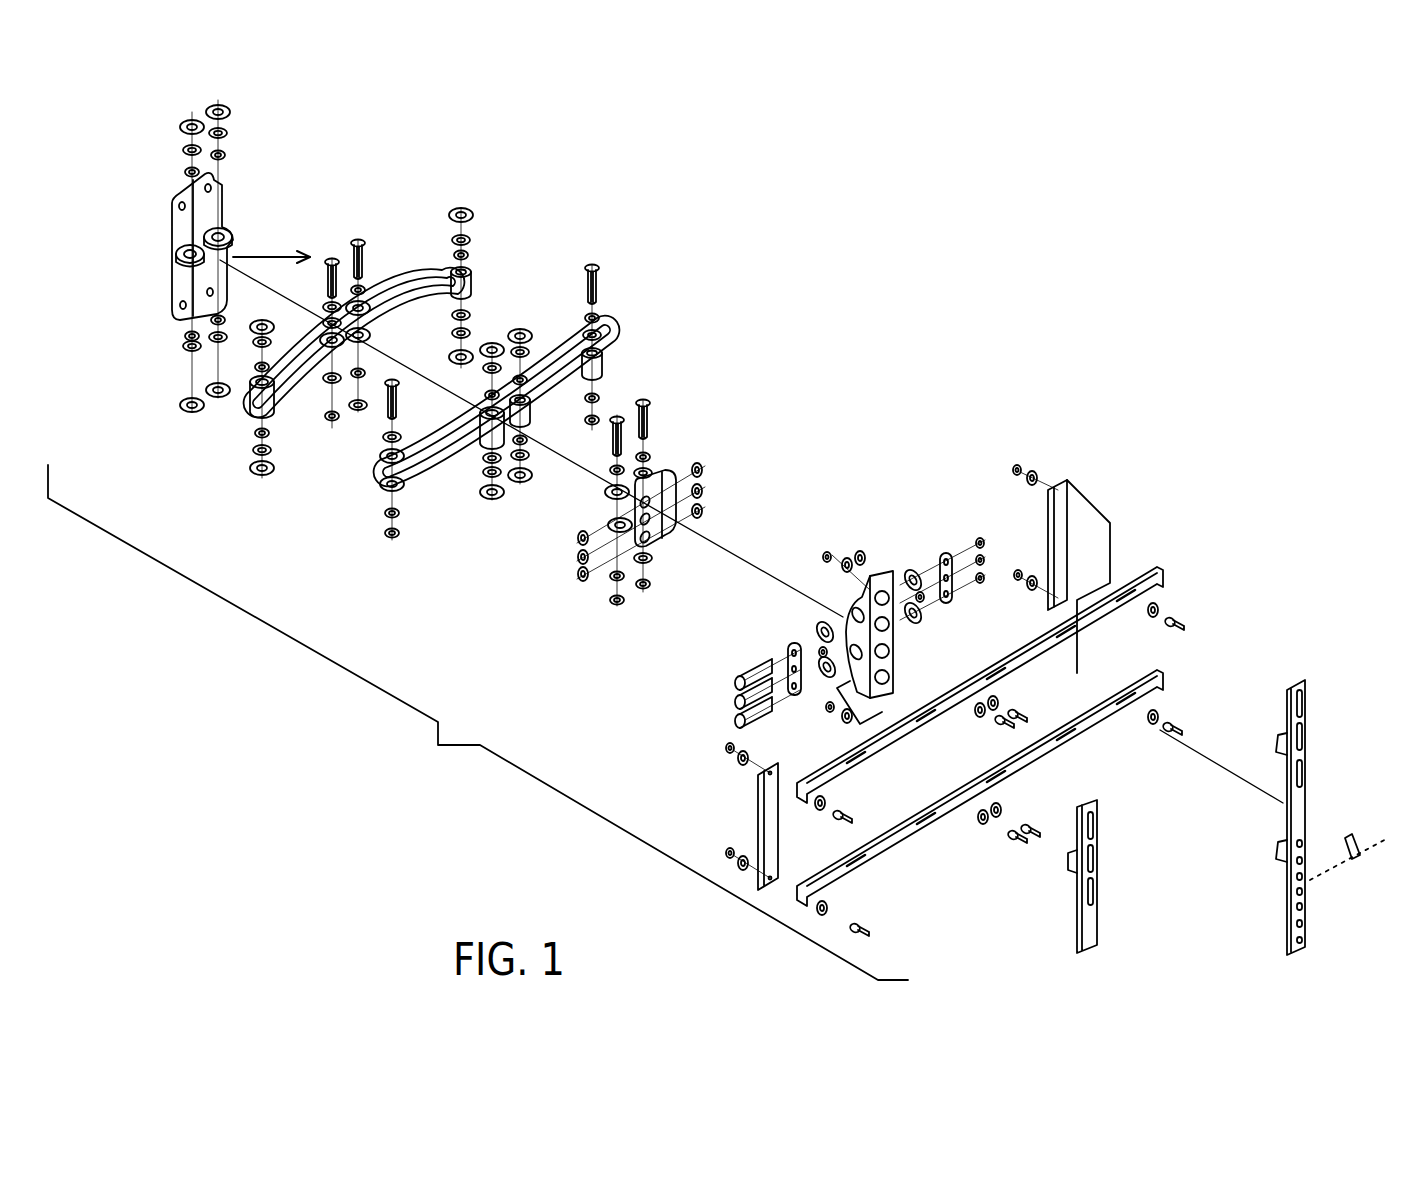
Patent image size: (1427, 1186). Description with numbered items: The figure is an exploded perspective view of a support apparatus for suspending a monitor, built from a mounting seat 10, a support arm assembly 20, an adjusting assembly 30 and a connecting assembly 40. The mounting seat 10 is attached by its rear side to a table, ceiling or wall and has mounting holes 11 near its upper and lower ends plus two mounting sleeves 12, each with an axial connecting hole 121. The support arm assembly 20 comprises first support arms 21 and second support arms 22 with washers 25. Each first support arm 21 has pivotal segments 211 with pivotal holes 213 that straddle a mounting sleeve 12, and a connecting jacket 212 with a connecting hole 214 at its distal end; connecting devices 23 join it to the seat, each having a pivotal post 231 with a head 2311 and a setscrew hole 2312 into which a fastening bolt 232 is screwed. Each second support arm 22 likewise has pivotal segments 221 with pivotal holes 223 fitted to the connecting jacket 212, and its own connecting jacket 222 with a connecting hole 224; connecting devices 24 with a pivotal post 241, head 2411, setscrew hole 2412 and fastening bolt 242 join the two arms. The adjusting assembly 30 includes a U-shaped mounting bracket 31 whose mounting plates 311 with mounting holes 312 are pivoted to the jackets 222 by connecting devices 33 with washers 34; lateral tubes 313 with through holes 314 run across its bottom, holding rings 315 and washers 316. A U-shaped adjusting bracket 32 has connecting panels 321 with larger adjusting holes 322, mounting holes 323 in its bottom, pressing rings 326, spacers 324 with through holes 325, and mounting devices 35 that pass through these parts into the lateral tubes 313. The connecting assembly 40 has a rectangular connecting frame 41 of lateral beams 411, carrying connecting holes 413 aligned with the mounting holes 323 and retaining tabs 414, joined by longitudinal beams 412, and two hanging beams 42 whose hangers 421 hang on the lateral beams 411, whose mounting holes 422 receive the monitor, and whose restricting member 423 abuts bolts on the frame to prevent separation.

The mounting seat 10 is at (231, 256).
The mounting holes 11 is at (217, 187).
The mounting sleeves 12 is at (187, 270).
The connecting hole 121 is at (225, 237).
The support arm assembly 20 is at (570, 245).
The first support arms 21 is at (488, 203).
The pivotal segments 211 is at (450, 277).
The connecting jacket 212 is at (472, 292).
The pivotal hole 213 is at (368, 302).
The connecting hole 214 is at (465, 278).
The second support arms 22 is at (421, 500).
The pivotal segments 221 is at (595, 358).
The connecting jacket 222 is at (523, 418).
The pivotal hole 223 is at (610, 335).
The connecting hole 224 is at (473, 437).
The connecting devices 23 is at (200, 250).
The pivotal post 231 is at (208, 308).
The head 2311 is at (358, 240).
The setscrew hole 2312 is at (255, 328).
The fastening bolt 232 is at (358, 400).
The connecting devices 24 is at (634, 218).
The pivotal post 241 is at (598, 283).
The head 2411 is at (594, 267).
The setscrew hole 2412 is at (606, 302).
The fastening bolt 242 is at (598, 418).
The washers 25 is at (238, 366).
The adjusting assembly 30 is at (900, 400).
The mounting bracket 31 is at (662, 440).
The mounting plates 311 is at (657, 467).
The mounting holes 312 is at (660, 525).
The lateral tubes 313 is at (693, 503).
The through hole 314 is at (643, 573).
The rings 315 is at (703, 472).
The washers 316 is at (575, 577).
The adjusting bracket 32 is at (890, 548).
The connecting panels 321 is at (853, 597).
The adjusting holes 322 is at (818, 631).
The mounting holes 323 is at (885, 690).
The spacers 324 is at (790, 692).
The through holes 325 is at (835, 722).
The pressing rings 326 is at (920, 627).
The connecting devices 33 is at (660, 400).
The washers 34 is at (513, 497).
The mounting devices 35 is at (732, 707).
The connecting assembly 40 is at (1272, 573).
The connecting frame 41 is at (954, 701).
The lateral beams 411 is at (1113, 713).
The longitudinal beams 412 is at (770, 817).
The connecting holes 413 is at (990, 690).
The retaining tabs 414 is at (763, 773).
The hanging beams 42 is at (1328, 756).
The hangers 421 is at (1277, 740).
The mounting holes 422 is at (1307, 843).
The restricting member 423 is at (1358, 856).